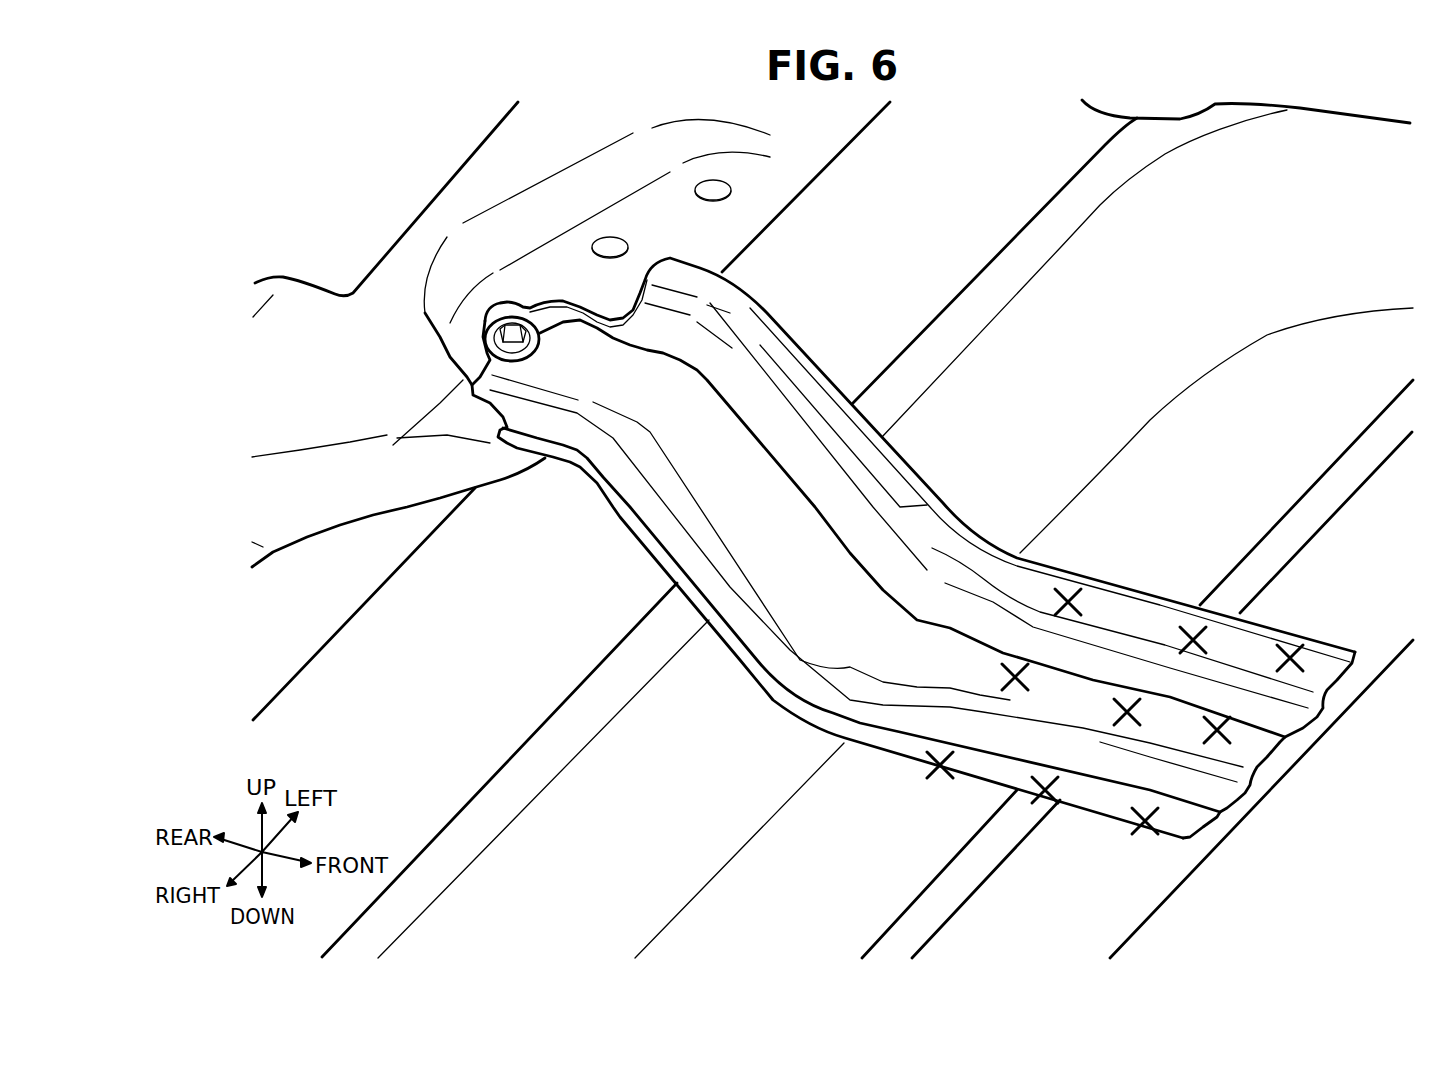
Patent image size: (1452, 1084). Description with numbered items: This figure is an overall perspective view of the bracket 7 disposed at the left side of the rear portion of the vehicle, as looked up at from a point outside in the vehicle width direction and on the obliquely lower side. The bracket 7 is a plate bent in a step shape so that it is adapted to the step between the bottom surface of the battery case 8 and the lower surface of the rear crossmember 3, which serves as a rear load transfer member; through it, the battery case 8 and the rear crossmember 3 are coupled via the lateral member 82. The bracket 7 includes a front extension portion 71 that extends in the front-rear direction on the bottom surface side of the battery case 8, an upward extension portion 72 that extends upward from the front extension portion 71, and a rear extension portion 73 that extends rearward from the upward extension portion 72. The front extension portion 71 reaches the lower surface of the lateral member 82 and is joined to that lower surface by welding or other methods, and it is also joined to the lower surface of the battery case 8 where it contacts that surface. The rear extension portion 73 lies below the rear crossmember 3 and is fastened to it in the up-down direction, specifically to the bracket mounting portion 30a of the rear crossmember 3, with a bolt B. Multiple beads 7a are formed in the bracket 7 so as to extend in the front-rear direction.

The rear crossmember 3 is at (467, 188).
The bracket mounting portion 30a is at (560, 263).
The bracket 7 is at (877, 506).
The bead 7a is at (677, 338).
The front extension portion 71 is at (1130, 610).
The upward extension portion 72 is at (927, 518).
The rear extension portion 73 is at (707, 262).
The battery case 8 is at (1300, 165).
The lateral member 82 is at (1337, 563).
The bolt B is at (507, 350).